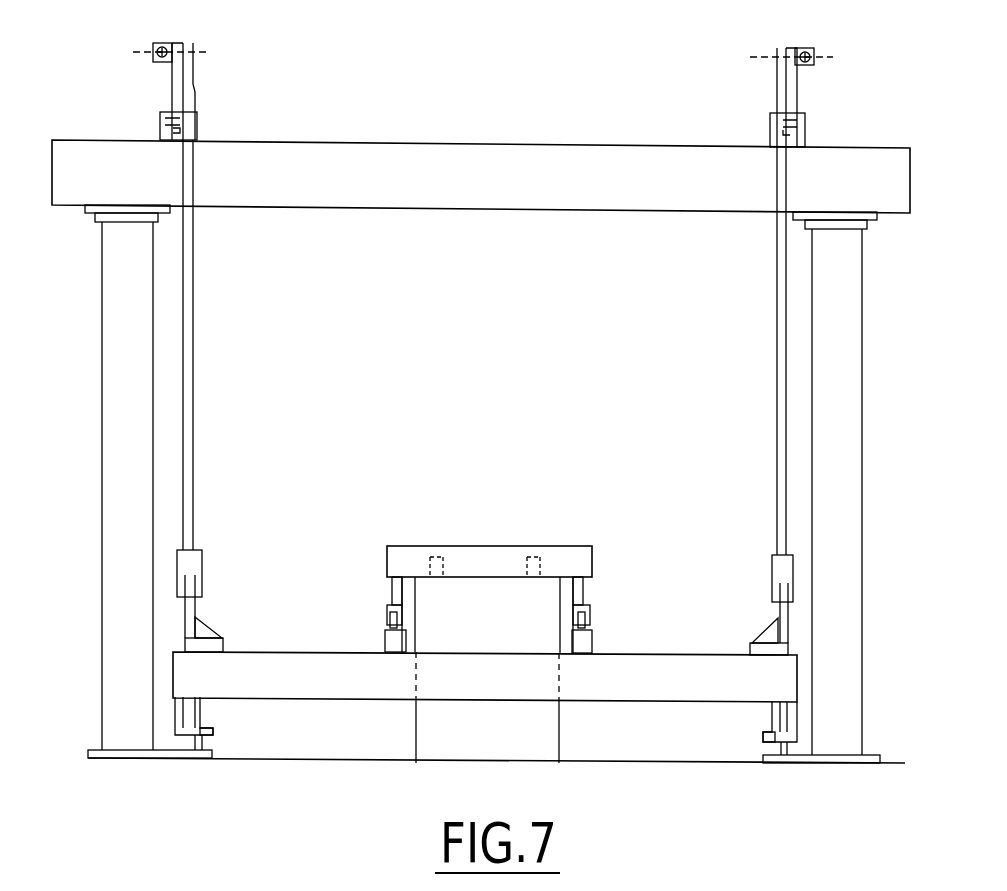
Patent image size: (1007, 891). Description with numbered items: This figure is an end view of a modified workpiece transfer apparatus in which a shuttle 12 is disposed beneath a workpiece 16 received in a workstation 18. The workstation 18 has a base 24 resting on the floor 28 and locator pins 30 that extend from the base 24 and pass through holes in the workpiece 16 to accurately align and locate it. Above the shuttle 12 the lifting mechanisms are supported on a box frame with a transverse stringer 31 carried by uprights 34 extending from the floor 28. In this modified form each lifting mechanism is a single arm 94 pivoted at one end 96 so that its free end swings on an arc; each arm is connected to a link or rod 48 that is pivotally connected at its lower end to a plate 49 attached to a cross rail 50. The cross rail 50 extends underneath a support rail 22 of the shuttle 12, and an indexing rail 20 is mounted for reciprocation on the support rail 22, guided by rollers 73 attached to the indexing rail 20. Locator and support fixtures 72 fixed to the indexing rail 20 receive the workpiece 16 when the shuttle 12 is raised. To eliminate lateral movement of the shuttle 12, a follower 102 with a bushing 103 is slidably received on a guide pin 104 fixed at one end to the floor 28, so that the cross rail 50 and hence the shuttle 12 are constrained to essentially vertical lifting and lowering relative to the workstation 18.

The shuttle 12 is at (493, 581).
The workpiece 16 is at (478, 545).
The workstation 18 is at (493, 557).
The indexing rail 20 is at (390, 607).
The support rail 22 is at (390, 640).
The base 24 is at (525, 741).
The floor 28 is at (347, 760).
The locator pin 30 is at (442, 545).
The transverse stringer 31 is at (535, 155).
The upright 34 is at (108, 393).
The rod 48 is at (190, 338).
The plate 49 is at (193, 617).
The cross rail 50 is at (612, 693).
The locator and support fixture 72 is at (393, 585).
The roller 73 is at (390, 618).
The single arm 94 is at (173, 87).
The pivoted end 96 is at (196, 123).
The follower 102 is at (178, 717).
The bushing 103 is at (205, 735).
The guide pin 104 is at (198, 716).